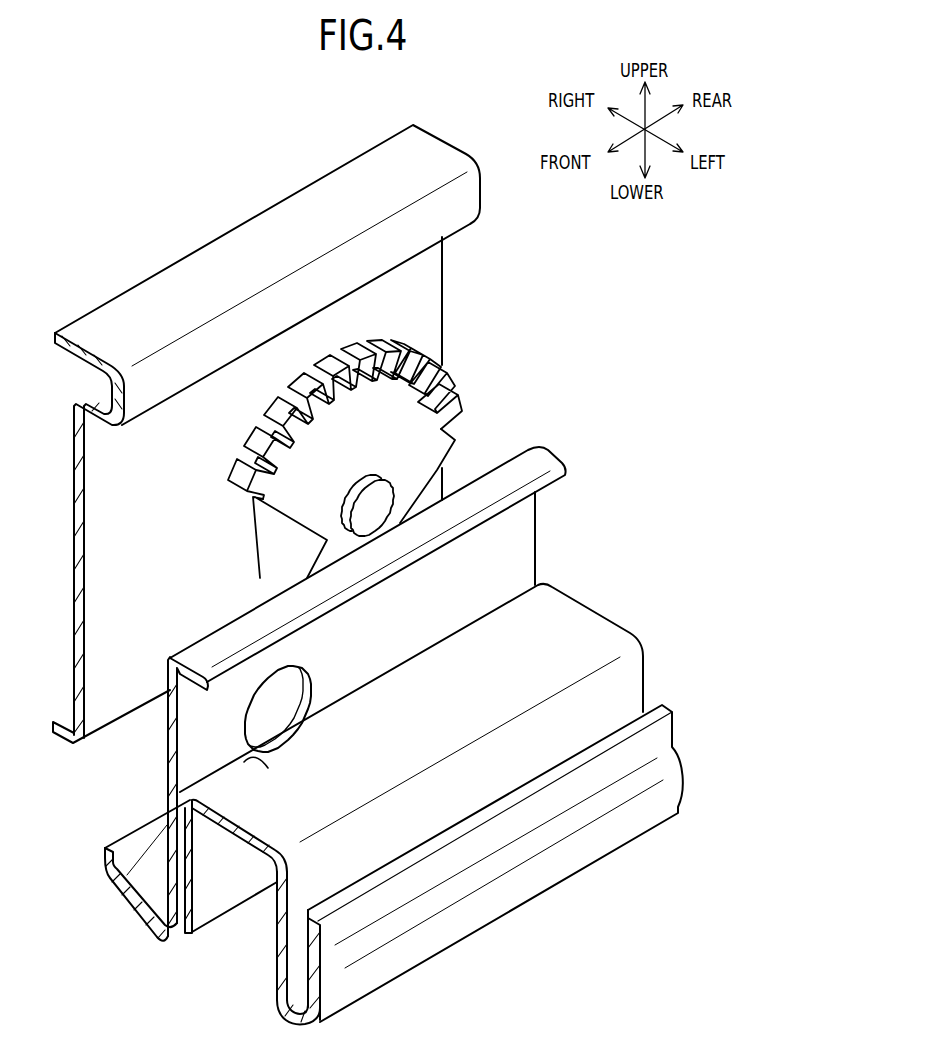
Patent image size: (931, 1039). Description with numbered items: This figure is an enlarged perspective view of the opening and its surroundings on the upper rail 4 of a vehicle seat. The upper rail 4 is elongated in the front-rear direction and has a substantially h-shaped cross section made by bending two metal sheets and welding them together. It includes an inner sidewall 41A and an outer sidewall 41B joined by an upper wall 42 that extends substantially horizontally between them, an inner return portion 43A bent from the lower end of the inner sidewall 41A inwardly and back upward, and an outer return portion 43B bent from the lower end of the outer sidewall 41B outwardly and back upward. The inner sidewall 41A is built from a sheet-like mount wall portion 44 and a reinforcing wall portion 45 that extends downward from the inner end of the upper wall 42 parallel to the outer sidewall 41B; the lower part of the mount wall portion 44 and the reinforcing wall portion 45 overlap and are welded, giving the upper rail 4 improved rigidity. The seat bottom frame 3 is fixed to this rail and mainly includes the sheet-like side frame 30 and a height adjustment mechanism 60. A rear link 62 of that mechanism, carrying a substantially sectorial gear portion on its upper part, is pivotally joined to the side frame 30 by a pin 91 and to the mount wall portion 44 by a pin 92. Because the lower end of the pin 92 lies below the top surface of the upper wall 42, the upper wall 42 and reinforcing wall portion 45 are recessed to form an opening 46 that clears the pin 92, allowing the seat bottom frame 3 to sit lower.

The seat bottom frame 3 is at (567, 278).
The side frame 30 is at (458, 298).
The height adjustment mechanism 60 is at (395, 444).
The rear link 62 is at (395, 444).
The pin 91 is at (385, 491).
The upper rail 4 is at (583, 962).
The inner sidewall 41A is at (77, 754).
The mount wall portion 44 is at (192, 744).
The reinforcing wall portion 45 is at (210, 846).
The outer sidewall 41B is at (366, 863).
The upper wall 42 is at (572, 632).
The inner return portion 43A is at (125, 907).
The outer return portion 43B is at (443, 930).
The opening 46 is at (247, 770).
The pin 92 is at (286, 720).